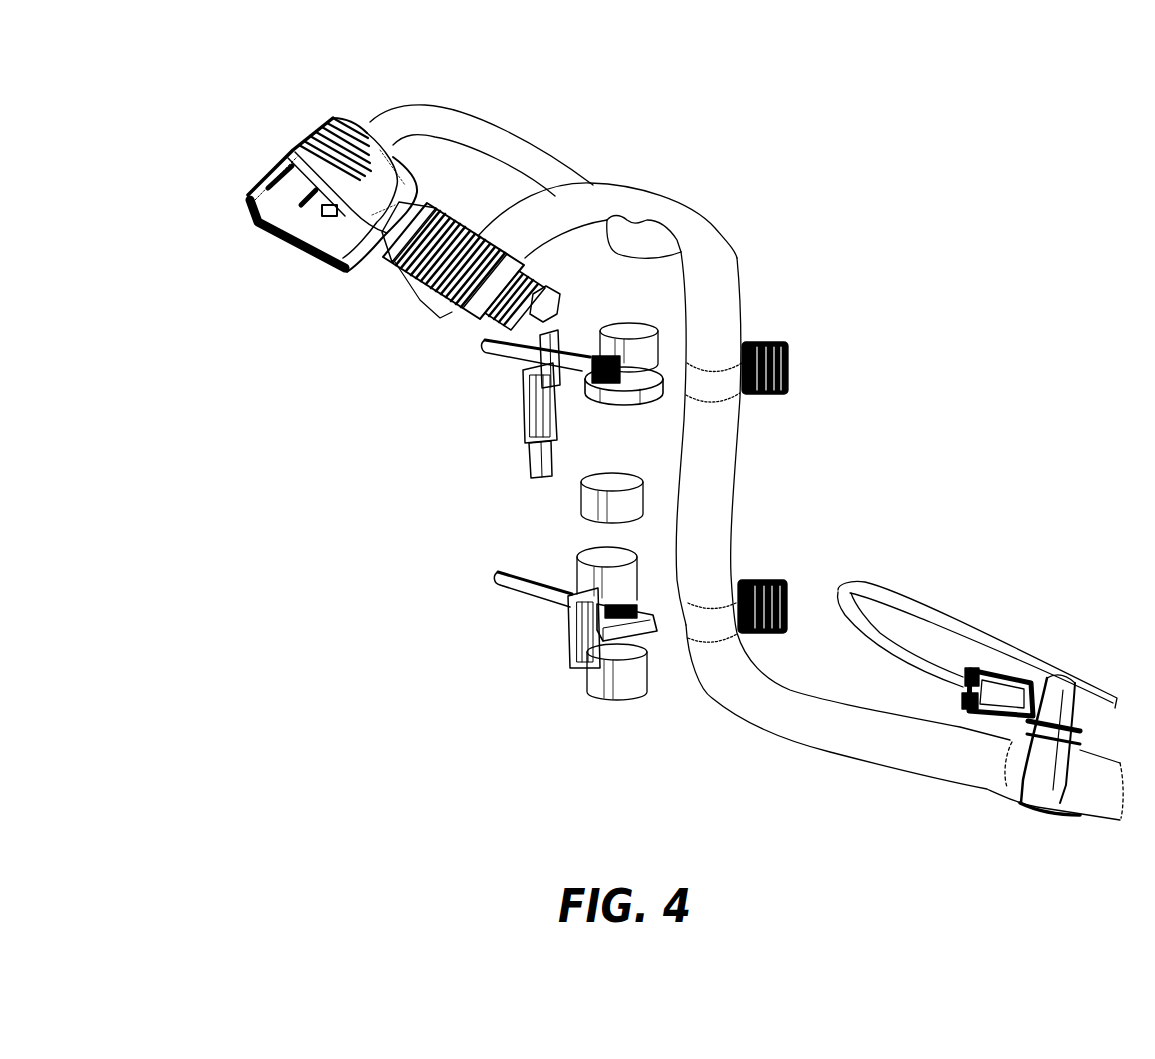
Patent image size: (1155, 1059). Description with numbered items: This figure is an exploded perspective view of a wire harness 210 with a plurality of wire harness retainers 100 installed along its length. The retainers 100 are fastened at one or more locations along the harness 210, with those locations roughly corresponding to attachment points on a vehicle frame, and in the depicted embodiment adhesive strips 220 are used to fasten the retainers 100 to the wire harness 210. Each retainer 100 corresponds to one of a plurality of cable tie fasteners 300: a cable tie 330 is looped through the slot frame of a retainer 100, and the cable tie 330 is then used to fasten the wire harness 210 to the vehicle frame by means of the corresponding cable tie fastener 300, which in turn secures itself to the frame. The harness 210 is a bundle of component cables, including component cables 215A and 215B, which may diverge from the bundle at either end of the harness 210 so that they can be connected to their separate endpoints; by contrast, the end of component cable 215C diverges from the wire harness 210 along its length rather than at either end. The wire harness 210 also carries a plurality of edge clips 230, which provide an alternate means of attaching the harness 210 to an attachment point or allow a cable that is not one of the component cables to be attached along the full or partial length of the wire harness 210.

The wire harness retainer 100 is at (507, 408).
The wire harness 210 is at (715, 280).
The component cable 215A is at (433, 123).
The component cable 215B is at (598, 200).
The component cable 215C is at (925, 600).
The adhesive strip 220 is at (648, 502).
The edge clip 230 is at (773, 578).
The cable tie fastener 300 is at (1060, 710).
The cable tie 330 is at (593, 402).